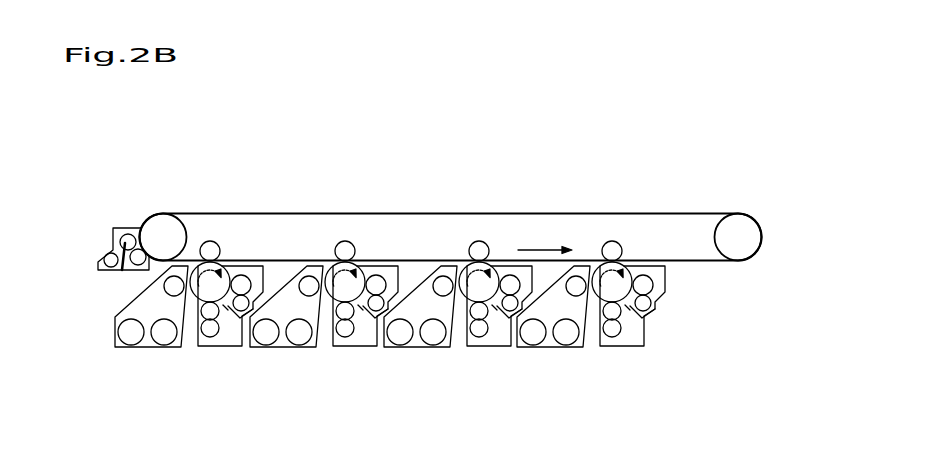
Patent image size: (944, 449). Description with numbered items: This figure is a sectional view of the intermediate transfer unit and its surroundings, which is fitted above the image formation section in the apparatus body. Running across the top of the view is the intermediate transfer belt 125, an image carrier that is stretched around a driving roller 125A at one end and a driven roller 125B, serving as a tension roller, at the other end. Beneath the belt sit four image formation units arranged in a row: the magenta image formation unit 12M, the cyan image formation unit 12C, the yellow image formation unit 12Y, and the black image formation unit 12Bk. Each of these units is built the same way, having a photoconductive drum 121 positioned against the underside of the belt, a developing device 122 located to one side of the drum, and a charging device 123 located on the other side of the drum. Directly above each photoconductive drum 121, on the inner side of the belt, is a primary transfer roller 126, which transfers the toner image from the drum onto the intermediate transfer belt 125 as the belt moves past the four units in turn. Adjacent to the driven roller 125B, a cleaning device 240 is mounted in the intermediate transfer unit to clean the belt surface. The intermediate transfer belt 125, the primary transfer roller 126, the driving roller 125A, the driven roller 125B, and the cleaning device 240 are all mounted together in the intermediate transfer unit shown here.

The intermediate transfer belt 125 is at (190, 213).
The driving roller 125A is at (737, 227).
The driven roller 125B is at (150, 222).
The primary transfer roller 126 is at (214, 241).
The cleaning device 240 is at (100, 256).
The magenta image formation unit 12M is at (197, 278).
The cyan image formation unit 12C is at (380, 232).
The yellow image formation unit 12Y is at (512, 232).
The black image formation unit 12Bk is at (645, 232).
The photoconductive drum 121 is at (195, 297).
The developing device 122 is at (138, 349).
The charging device 123 is at (235, 349).